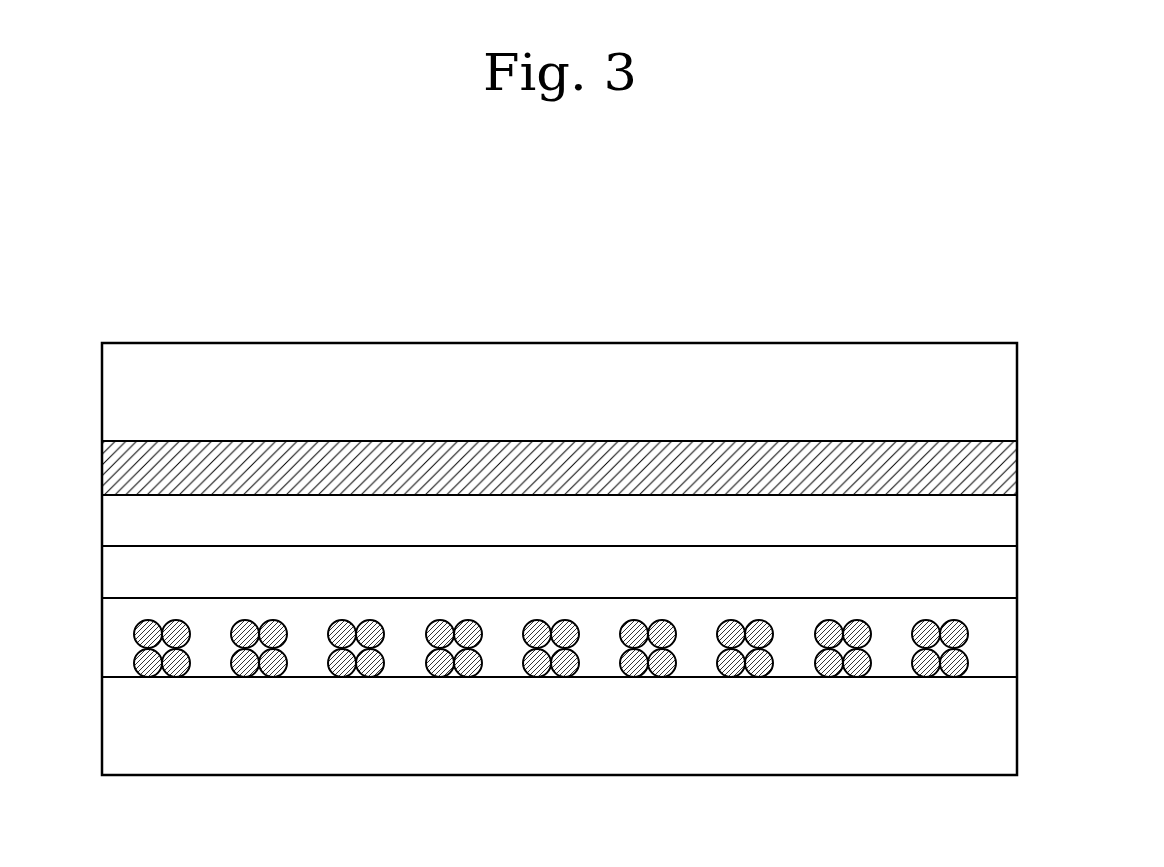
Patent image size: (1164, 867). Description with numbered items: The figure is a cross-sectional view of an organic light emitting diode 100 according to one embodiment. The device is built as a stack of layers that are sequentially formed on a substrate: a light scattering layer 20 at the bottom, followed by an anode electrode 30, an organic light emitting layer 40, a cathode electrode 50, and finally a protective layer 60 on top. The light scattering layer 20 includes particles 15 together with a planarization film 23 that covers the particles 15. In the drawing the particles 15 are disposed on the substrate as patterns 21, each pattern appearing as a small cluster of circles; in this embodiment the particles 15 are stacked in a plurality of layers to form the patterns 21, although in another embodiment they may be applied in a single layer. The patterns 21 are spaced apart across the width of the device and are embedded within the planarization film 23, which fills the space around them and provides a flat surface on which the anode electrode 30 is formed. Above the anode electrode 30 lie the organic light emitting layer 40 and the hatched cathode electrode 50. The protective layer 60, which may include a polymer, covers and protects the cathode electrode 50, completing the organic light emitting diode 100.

The organic light emitting diode 100 is at (877, 303).
The protective layer 60 is at (1005, 392).
The cathode electrode 50 is at (1005, 466).
The organic light emitting layer 40 is at (1005, 521).
The anode electrode 30 is at (1005, 560).
The light scattering layer 20 is at (617, 627).
The pattern 21 is at (940, 617).
The planarization film 23 is at (1005, 627).
The particles 15 is at (955, 658).